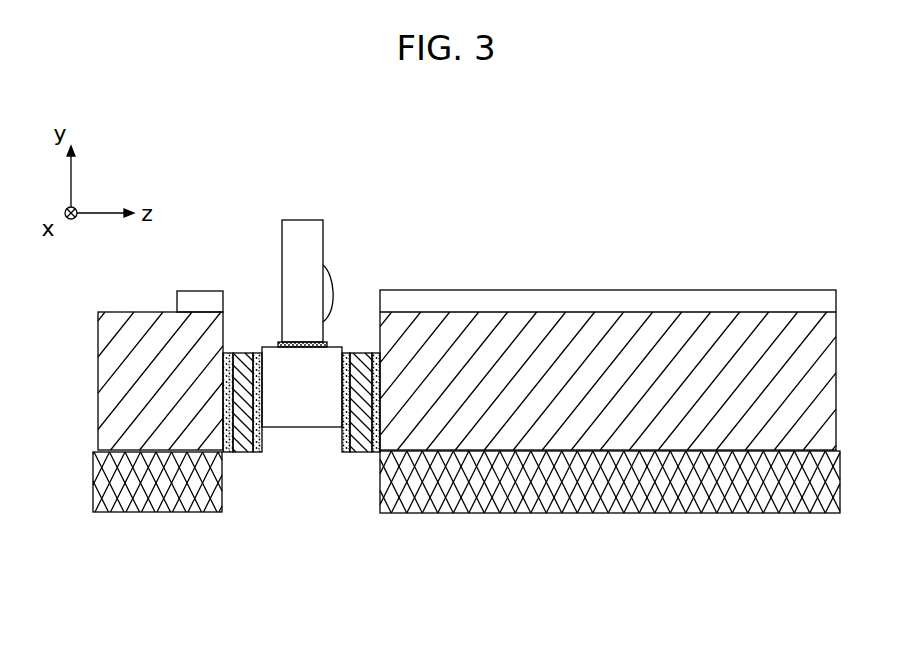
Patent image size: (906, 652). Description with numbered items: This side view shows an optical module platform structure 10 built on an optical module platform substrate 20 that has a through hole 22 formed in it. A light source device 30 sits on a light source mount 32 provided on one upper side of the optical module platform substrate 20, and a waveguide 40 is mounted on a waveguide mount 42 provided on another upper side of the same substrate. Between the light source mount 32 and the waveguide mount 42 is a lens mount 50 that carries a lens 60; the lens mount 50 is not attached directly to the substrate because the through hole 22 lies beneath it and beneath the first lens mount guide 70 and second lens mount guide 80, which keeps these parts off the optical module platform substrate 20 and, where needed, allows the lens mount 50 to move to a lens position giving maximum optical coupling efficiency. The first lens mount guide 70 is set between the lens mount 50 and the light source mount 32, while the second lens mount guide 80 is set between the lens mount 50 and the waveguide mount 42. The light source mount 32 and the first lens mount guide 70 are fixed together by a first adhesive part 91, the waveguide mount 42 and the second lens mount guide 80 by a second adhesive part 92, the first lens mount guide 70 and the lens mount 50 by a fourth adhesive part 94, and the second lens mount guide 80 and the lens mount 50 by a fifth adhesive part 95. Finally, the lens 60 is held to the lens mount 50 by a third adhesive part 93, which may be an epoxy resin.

The optical module platform structure 10 is at (203, 198).
The optical module platform substrate 20 is at (618, 505).
The through hole 22 is at (333, 483).
The light source device 30 is at (178, 295).
The light source mount 32 is at (105, 392).
The waveguide 40 is at (608, 329).
The waveguide mount 42 is at (737, 360).
The lens mount 50 is at (297, 427).
The lens 60 is at (304, 225).
The first lens mount guide 70 is at (240, 488).
The second lens mount guide 80 is at (366, 428).
The first adhesive part 91 is at (230, 455).
The second adhesive part 92 is at (372, 455).
The third adhesive part 93 is at (277, 340).
The fourth adhesive part 94 is at (262, 430).
The fifth adhesive part 95 is at (347, 348).